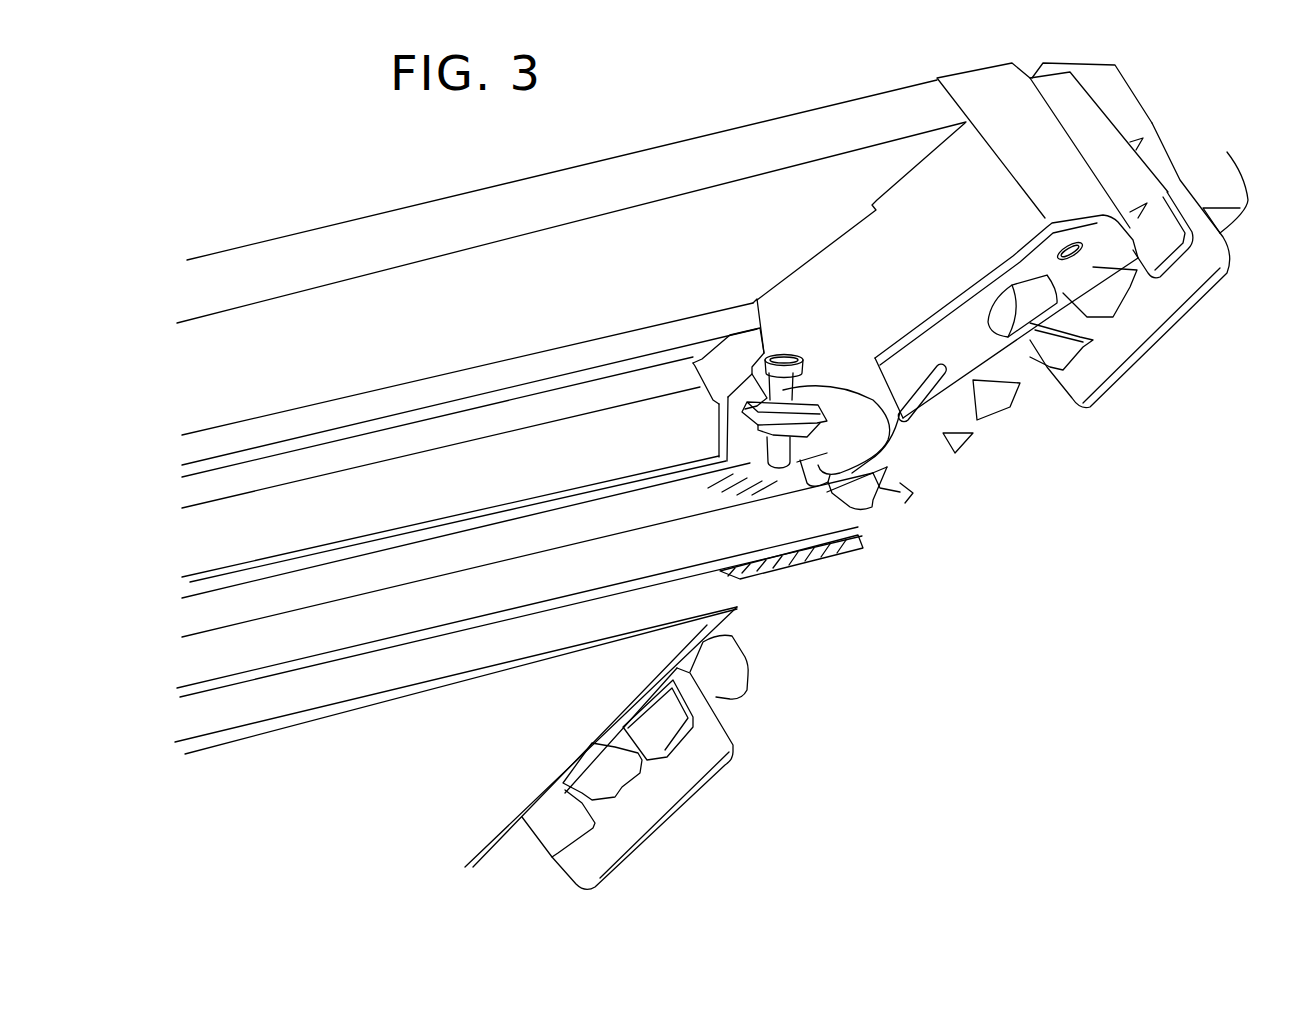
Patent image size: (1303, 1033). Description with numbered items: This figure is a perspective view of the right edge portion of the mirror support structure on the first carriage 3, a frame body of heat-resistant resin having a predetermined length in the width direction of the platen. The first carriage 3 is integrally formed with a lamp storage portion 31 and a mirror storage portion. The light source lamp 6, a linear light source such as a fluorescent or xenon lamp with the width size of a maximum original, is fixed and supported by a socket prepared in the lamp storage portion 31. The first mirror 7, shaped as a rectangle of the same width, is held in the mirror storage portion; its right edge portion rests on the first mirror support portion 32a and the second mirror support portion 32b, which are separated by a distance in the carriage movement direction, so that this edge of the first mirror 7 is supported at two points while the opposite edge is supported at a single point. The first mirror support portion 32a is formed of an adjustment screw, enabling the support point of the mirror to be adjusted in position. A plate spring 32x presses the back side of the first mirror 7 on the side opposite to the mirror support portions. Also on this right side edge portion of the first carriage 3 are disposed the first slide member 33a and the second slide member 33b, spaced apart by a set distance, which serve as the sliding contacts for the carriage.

The first carriage 3 is at (313, 257).
The light source lamp 6 is at (642, 425).
The first mirror 7 is at (810, 518).
The lamp storage portion 31 is at (722, 363).
The first mirror support portion 32a is at (943, 452).
The second mirror support portion 32b is at (905, 500).
The plate spring 32x is at (790, 563).
The first slide member 33a is at (1127, 340).
The second slide member 33b is at (670, 792).